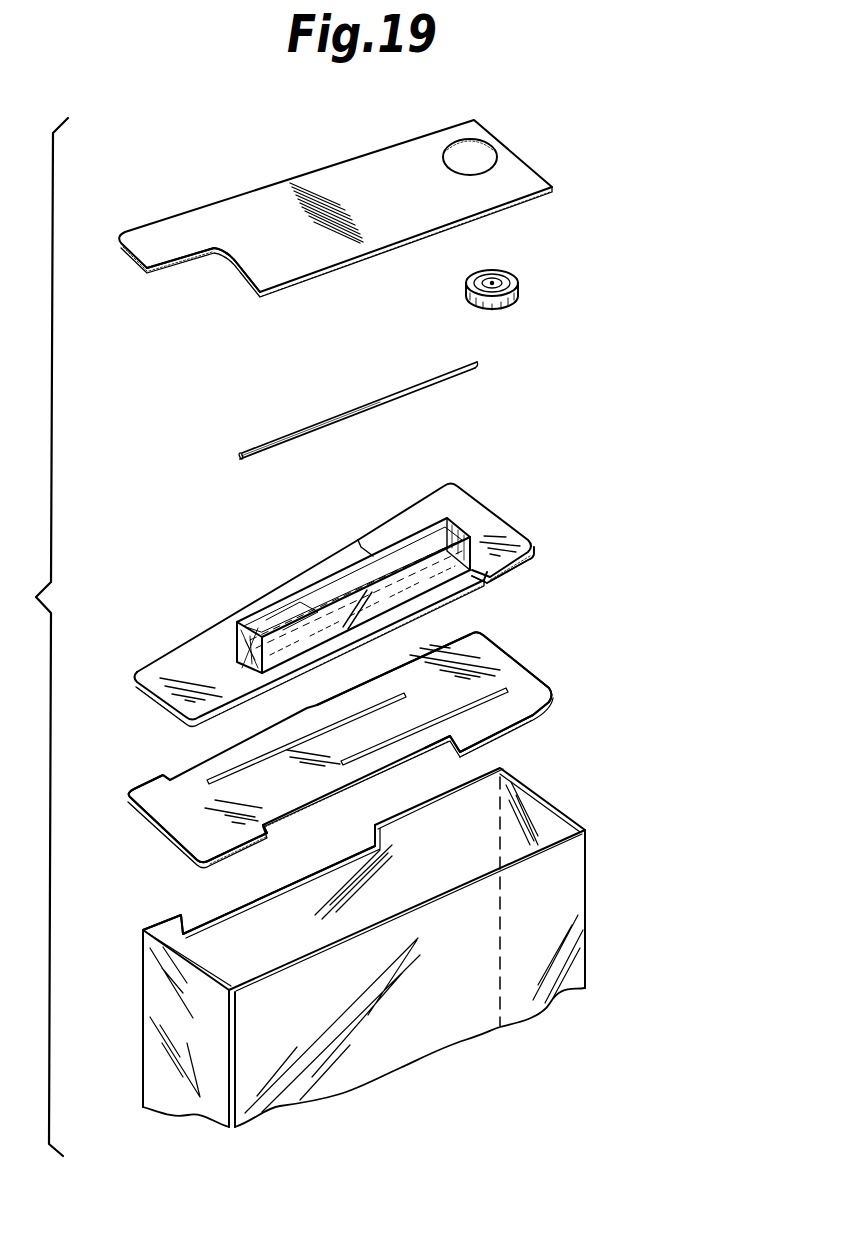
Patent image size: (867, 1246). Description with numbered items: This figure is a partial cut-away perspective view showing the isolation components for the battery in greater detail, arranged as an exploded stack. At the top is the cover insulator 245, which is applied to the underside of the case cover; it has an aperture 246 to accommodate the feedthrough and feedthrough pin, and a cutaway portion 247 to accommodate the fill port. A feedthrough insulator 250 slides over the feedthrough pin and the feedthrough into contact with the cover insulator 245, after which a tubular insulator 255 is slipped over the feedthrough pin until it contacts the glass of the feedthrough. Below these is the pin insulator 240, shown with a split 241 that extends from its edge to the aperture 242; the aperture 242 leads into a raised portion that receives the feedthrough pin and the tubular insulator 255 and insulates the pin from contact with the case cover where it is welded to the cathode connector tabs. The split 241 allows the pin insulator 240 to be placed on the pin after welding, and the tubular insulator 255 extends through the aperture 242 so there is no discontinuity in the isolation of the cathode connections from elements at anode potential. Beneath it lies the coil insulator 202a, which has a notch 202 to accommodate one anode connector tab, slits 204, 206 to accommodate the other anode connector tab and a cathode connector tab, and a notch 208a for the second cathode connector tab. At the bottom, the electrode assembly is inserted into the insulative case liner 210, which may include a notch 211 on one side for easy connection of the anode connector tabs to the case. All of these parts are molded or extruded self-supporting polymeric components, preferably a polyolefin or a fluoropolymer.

The notch 202 is at (200, 763).
The coil insulator 202a is at (523, 671).
The slit 204 is at (160, 827).
The slit 206 is at (497, 700).
The notch 208a is at (423, 750).
The case liner 210 is at (587, 877).
The notch 211 is at (248, 902).
The pin insulator 240 is at (512, 520).
The split 241 is at (490, 576).
The aperture 242 is at (467, 527).
The cover insulator 245 is at (523, 158).
The aperture 246 is at (487, 142).
The cutaway portion 247 is at (233, 265).
The feedthrough insulator 250 is at (518, 281).
The tubular insulator 255 is at (476, 363).